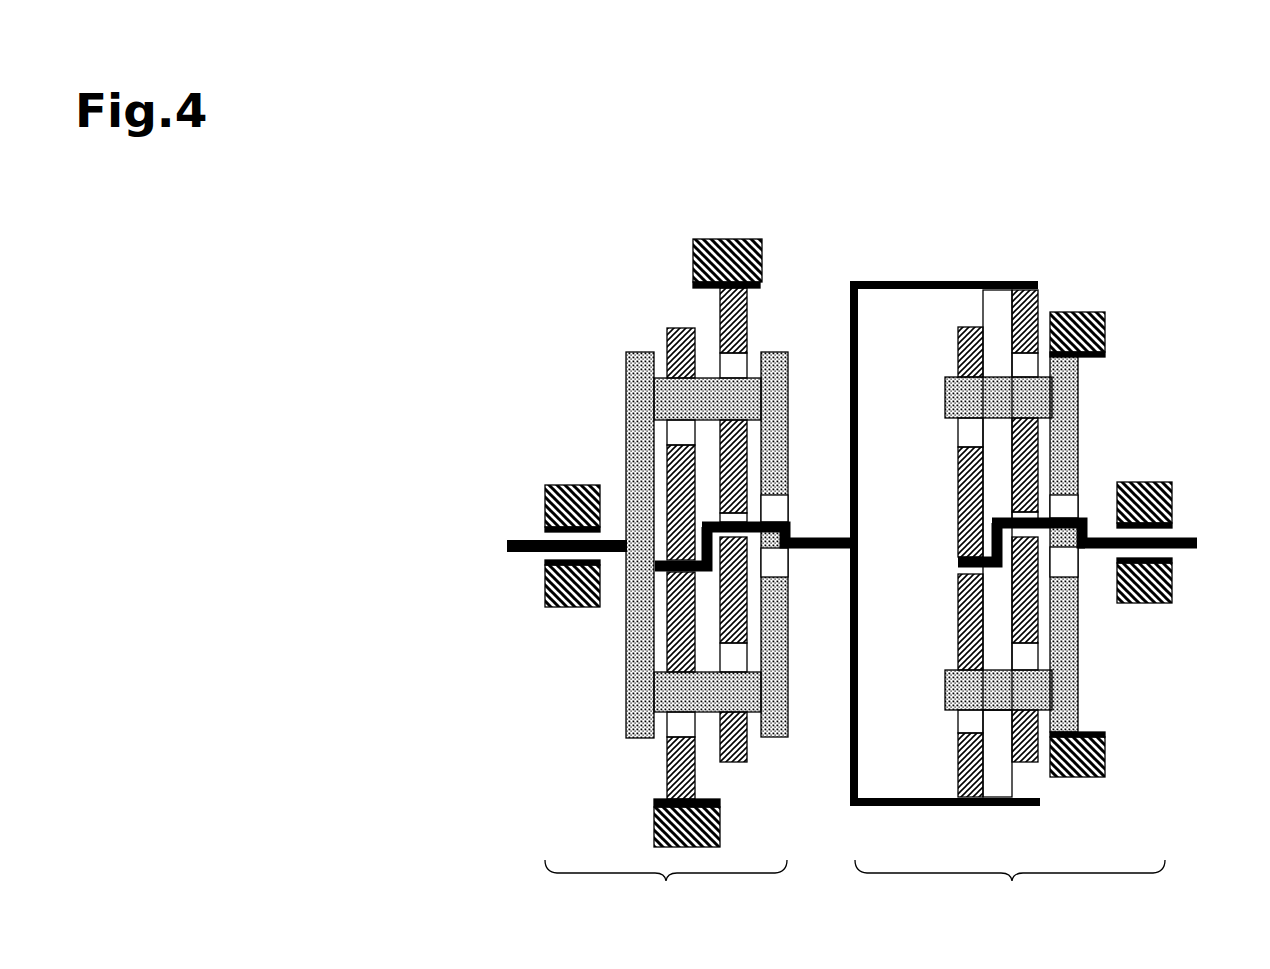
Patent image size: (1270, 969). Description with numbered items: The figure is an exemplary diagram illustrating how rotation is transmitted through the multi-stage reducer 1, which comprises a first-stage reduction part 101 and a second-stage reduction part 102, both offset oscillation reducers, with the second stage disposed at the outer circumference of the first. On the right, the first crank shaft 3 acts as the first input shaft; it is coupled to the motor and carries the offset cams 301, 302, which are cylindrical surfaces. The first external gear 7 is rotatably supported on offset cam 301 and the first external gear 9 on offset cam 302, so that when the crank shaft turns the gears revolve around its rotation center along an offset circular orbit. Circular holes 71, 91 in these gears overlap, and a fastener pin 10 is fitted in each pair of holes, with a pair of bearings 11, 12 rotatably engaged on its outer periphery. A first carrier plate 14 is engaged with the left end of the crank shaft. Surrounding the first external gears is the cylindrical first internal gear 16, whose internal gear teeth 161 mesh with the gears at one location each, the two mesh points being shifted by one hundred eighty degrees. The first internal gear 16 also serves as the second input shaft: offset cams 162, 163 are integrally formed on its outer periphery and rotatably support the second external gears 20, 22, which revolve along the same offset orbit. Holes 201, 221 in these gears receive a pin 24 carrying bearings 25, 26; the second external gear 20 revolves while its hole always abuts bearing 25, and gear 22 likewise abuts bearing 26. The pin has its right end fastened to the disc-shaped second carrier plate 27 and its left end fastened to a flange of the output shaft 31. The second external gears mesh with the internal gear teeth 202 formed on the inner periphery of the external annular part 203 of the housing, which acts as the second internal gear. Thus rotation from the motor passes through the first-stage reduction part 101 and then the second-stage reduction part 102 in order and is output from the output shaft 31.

The reducer 1 is at (1203, 276).
The first crank shaft 3 is at (1183, 532).
The first external gear 7 is at (1059, 515).
The first external gear 9 is at (1059, 515).
The fastener pin 10 is at (947, 400).
The bearing 11 is at (944, 562).
The bearing 12 is at (1043, 722).
The first carrier plate 14 is at (1082, 622).
The first internal gear 16 is at (984, 519).
The internal gear teeth 161 is at (968, 295).
The offset cam 162 is at (667, 563).
The offset cam 163 is at (747, 502).
The second external gear 20 is at (620, 543).
The second external gear 22 is at (620, 543).
The pin 24 is at (752, 404).
The bearing 25 is at (673, 658).
The bearing 26 is at (747, 737).
The second carrier plate 27 is at (630, 425).
The output shaft 31 is at (520, 541).
The hole 71 is at (970, 735).
The hole 91 is at (1003, 710).
The first-stage reduction part 101 is at (1010, 888).
The second-stage reduction part 102 is at (666, 889).
The hole 201 is at (680, 730).
The internal gear teeth 202 is at (751, 552).
The external annular part 203 is at (700, 240).
The hole 221 is at (740, 652).
The offset cam 301 is at (1047, 517).
The offset cam 302 is at (968, 547).